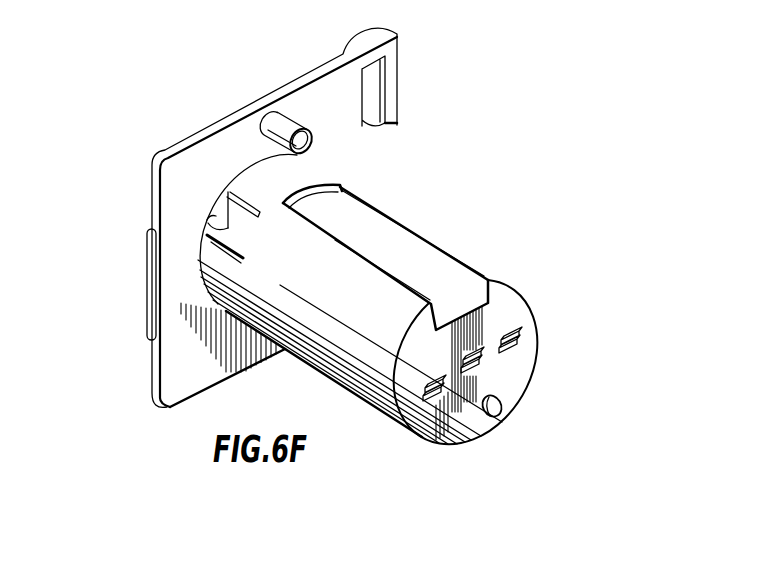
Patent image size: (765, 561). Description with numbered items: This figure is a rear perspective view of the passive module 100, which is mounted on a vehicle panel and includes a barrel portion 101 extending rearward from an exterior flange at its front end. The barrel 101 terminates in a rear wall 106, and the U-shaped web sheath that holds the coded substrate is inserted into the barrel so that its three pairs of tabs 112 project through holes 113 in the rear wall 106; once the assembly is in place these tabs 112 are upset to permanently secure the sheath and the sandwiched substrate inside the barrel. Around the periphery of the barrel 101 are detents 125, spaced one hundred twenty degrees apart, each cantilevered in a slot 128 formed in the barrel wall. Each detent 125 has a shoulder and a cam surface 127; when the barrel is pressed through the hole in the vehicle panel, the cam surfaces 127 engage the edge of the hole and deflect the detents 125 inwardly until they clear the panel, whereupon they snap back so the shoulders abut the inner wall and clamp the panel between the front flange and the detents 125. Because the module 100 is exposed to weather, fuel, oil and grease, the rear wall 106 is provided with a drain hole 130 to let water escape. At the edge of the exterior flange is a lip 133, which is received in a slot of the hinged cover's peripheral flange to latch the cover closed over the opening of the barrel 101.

The passive module 100 is at (409, 212).
The barrel portion 101 is at (454, 249).
The rear wall 106 is at (519, 384).
The tabs 112 is at (481, 360).
The holes 113 is at (457, 353).
The detents 125 is at (246, 207).
The cam surface 127 is at (224, 221).
The slots 128 is at (220, 246).
The drain hole 130 is at (499, 409).
The lip 133 is at (148, 277).